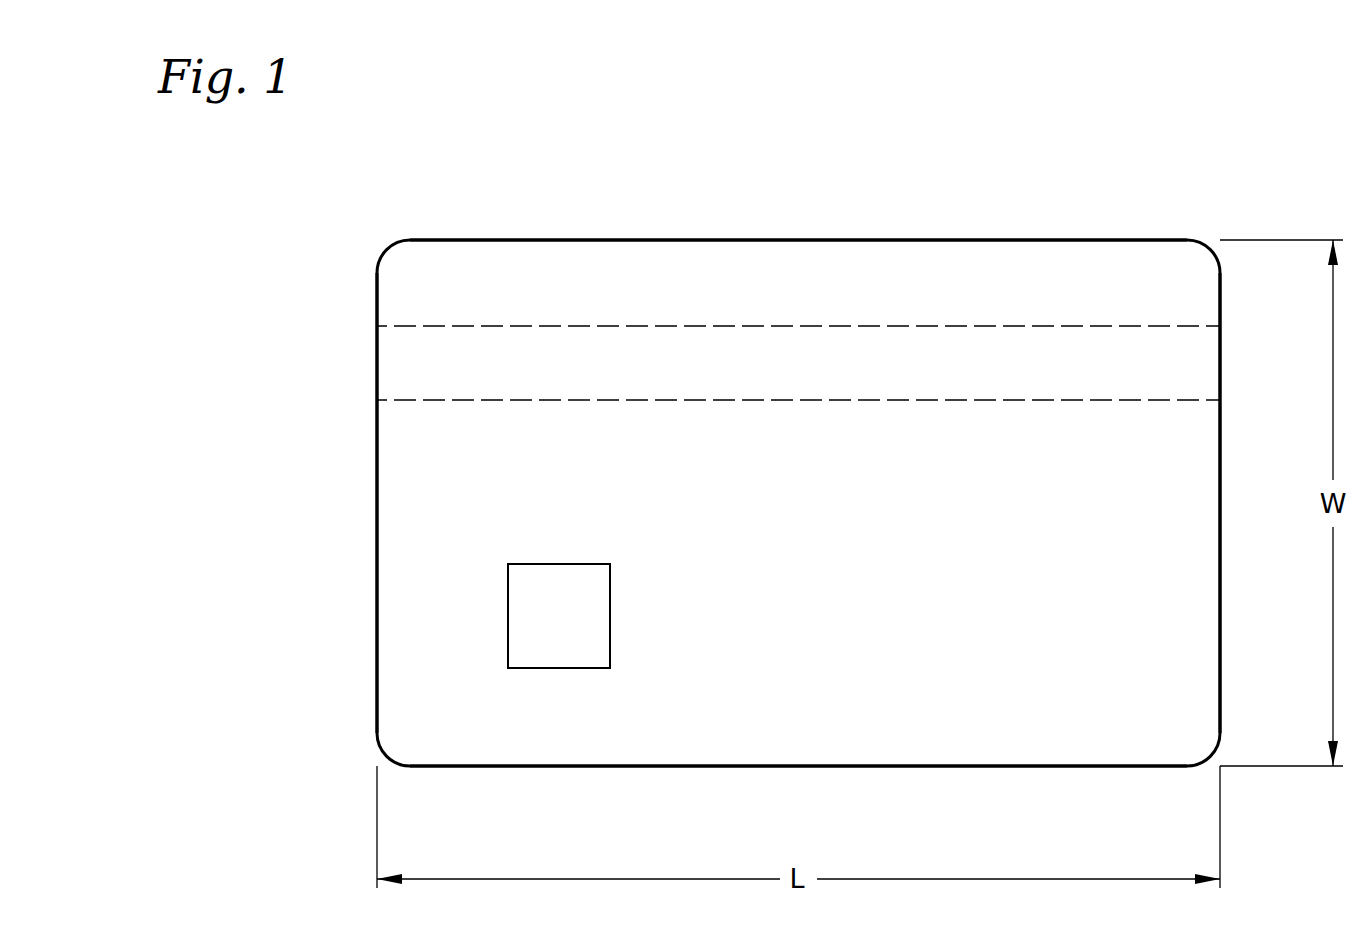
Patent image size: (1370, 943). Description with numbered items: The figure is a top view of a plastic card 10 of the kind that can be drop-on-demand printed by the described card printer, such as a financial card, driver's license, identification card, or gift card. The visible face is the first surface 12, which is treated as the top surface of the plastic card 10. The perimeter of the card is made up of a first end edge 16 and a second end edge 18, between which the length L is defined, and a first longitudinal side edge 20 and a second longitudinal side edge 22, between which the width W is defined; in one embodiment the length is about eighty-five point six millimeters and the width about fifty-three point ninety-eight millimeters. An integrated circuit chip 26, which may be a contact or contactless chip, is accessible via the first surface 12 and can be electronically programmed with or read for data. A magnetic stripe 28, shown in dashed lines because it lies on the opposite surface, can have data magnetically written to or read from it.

The plastic card 10 is at (988, 165).
The first surface 12 is at (410, 467).
The first end edge 16 is at (1221, 577).
The second end edge 18 is at (376, 580).
The first longitudinal side edge 20 is at (652, 766).
The second longitudinal side edge 22 is at (617, 240).
The integrated circuit chip 26 is at (507, 636).
The magnetic stripe 28 is at (1024, 325).